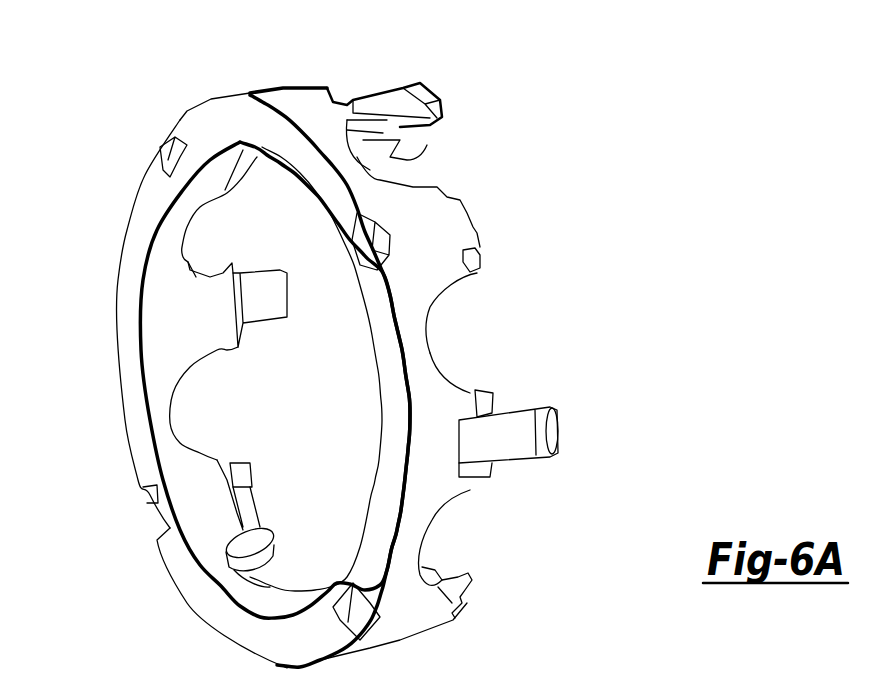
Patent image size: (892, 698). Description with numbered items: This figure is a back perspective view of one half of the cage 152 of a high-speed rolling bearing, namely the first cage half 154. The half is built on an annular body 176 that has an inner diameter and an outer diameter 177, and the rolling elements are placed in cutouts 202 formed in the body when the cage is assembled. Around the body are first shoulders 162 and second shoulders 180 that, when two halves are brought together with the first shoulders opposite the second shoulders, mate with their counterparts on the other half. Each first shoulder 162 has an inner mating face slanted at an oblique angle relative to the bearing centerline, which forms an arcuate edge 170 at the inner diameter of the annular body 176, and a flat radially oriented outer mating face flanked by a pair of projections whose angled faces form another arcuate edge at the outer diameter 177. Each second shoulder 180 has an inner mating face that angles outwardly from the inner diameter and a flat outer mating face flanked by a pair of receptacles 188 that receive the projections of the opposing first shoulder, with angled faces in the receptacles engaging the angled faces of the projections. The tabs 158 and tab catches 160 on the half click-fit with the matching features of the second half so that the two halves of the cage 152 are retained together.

The cage 152 is at (120, 117).
The first cage half 154 is at (210, 123).
The tabs 158 is at (425, 90).
The arcuate edge 170 is at (365, 145).
The tab catches 160 is at (390, 230).
The annular body 176 is at (475, 227).
The receptacles 188 is at (473, 260).
The second shoulders 180 is at (433, 252).
The cutouts 202 is at (430, 347).
The first shoulders 162 is at (445, 458).
The outer diameter 177 is at (390, 618).